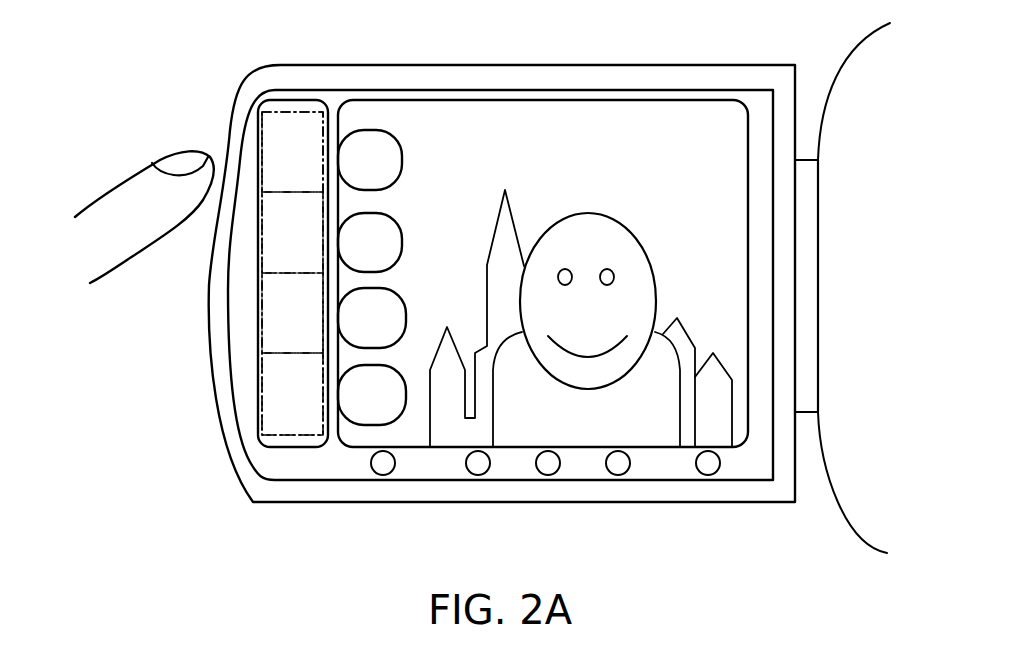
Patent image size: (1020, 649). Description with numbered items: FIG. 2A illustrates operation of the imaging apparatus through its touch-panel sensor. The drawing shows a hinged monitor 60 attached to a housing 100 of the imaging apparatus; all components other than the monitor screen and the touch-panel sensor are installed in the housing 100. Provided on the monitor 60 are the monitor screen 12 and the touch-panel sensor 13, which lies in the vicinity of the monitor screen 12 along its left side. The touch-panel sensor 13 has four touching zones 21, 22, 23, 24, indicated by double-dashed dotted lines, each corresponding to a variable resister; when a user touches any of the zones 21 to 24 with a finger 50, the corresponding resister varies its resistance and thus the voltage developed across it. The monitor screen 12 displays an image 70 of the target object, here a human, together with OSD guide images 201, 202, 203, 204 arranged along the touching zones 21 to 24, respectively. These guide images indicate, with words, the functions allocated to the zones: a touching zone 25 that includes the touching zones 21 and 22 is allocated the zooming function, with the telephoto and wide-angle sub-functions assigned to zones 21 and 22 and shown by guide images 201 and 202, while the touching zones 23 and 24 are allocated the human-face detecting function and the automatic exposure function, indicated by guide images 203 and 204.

The housing 100 is at (848, 40).
The hinged monitor 60 is at (756, 65).
The monitor screen 12 is at (688, 98).
The touch-panel sensor 13 is at (224, 233).
The touching zone 21 is at (276, 177).
The touching zone 22 is at (276, 240).
The touching zone 23 is at (273, 323).
The touching zone 24 is at (280, 387).
The touching zone 25 is at (222, 273).
The OSD guide image 201 is at (365, 130).
The OSD guide image 202 is at (402, 230).
The OSD guide image 203 is at (405, 334).
The OSD guide image 204 is at (357, 425).
The image 70 is at (588, 213).
The finger 50 is at (132, 172).